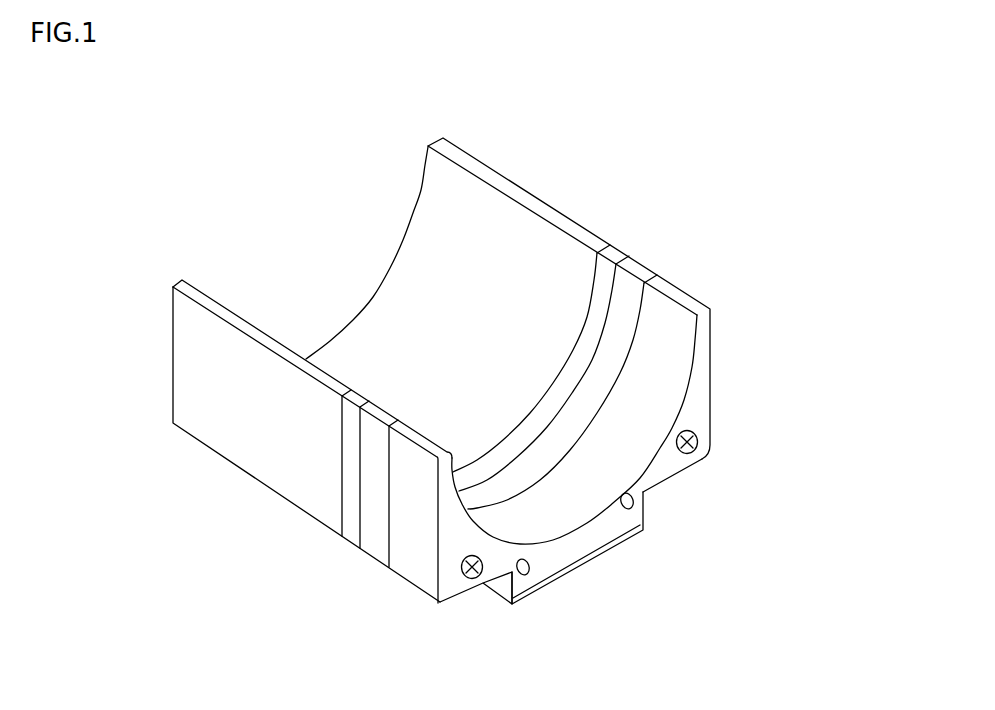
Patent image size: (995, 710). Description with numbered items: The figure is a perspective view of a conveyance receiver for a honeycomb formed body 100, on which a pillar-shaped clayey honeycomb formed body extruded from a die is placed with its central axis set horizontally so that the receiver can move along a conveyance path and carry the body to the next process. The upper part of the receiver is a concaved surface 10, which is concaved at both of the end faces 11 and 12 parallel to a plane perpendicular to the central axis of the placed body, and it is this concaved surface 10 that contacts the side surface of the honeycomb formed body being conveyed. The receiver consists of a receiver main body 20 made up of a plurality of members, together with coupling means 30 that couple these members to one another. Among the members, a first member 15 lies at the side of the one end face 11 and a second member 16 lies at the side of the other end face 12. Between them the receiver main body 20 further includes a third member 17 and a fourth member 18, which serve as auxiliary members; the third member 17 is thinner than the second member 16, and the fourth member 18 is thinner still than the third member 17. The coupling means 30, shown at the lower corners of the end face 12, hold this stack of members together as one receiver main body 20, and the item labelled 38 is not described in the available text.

The conveyance receiver for a honeycomb formed body 100 is at (670, 88).
The concaved surface 10 is at (400, 262).
The one end face 11 is at (171, 332).
The other end face 12 is at (690, 397).
The first member 15 is at (203, 430).
The second member 16 is at (408, 570).
The third member 17 is at (352, 532).
The fourth member 18 is at (377, 547).
The receiver main body 20 is at (512, 175).
The coupling means 30 is at (466, 590).
The screw 38 is at (475, 579).